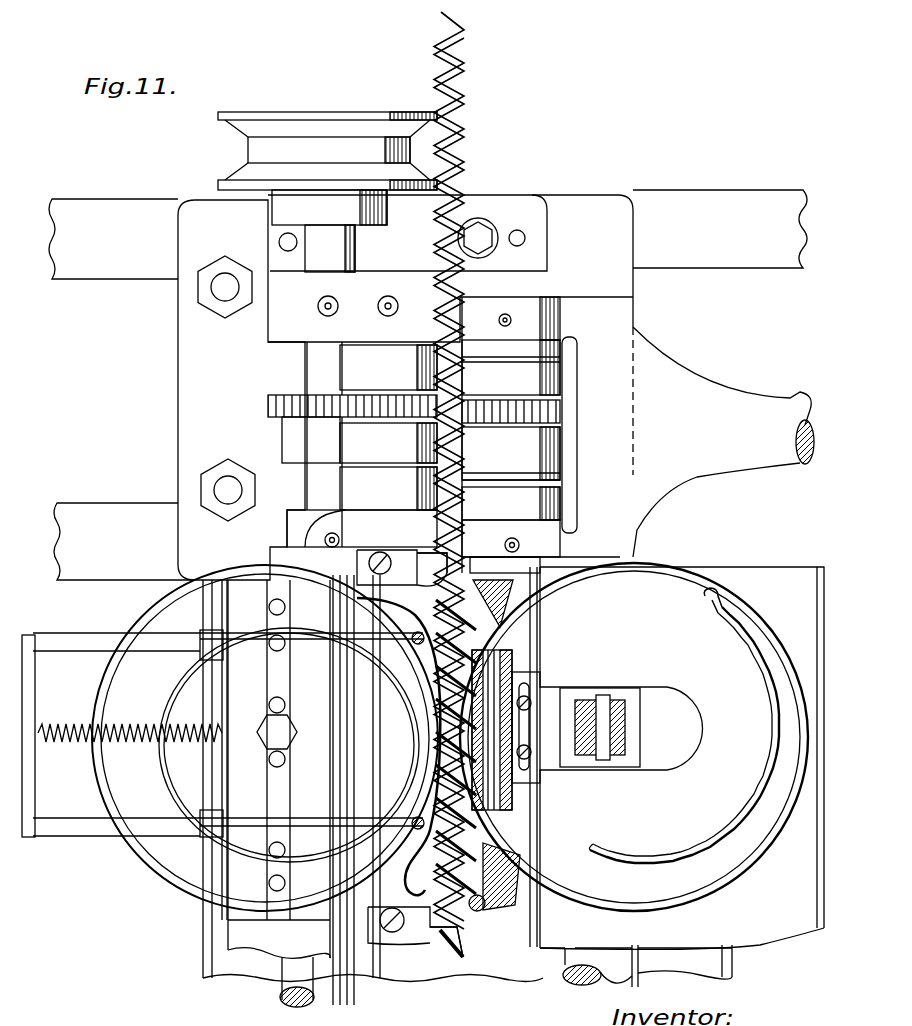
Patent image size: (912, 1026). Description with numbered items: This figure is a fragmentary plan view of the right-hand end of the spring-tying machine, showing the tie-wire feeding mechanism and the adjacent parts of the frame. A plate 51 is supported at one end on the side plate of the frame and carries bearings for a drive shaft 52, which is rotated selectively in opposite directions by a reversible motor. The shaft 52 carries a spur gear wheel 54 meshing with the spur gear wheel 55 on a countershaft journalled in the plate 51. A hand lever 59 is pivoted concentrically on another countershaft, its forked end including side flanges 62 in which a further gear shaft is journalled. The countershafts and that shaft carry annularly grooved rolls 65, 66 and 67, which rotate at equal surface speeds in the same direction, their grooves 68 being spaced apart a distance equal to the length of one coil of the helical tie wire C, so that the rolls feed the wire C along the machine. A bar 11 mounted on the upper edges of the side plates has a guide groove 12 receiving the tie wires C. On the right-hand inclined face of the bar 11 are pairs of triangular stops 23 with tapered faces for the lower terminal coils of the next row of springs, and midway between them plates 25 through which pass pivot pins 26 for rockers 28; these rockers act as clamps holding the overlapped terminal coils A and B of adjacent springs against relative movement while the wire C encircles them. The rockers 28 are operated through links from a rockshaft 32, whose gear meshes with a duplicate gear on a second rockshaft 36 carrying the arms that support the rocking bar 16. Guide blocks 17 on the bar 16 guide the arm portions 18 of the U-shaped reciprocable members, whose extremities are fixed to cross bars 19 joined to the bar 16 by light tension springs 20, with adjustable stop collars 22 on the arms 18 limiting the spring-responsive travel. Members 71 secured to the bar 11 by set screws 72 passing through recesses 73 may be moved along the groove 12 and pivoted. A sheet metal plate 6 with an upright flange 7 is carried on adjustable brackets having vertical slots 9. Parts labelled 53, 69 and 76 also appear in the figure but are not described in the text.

The helical tie wire c is at (462, 43).
The pulley 53 is at (320, 128).
The drive shaft 52 is at (358, 250).
The side flanges 62 is at (548, 297).
The plate 51 is at (213, 372).
The annularly grooved roll 65 is at (380, 382).
The spur gear wheel 54 is at (268, 408).
The annularly grooved roll 67 is at (507, 395).
The grooves 68 is at (560, 396).
The gear 69 is at (563, 412).
The hand lever 59 is at (712, 395).
The spur gear wheel 55 is at (372, 412).
The annularly grooved roll 66 is at (435, 458).
The guide groove 12 is at (425, 485).
The parallel vertical slots 9 is at (137, 547).
The members 71 is at (360, 565).
The set screws 72 is at (395, 955).
The recesses 73 is at (436, 755).
The sheet metal plate 6 is at (757, 567).
The upright flange 7 is at (817, 595).
The arm portions 18 is at (105, 627).
The cross bars 19 is at (35, 692).
The adjustable stop collars 22 is at (222, 655).
The light tension springs 20 is at (152, 720).
The stops 23 is at (490, 605).
The pivot pins 26 is at (485, 652).
The rockers 28 is at (510, 660).
The plates 25 is at (527, 683).
The rockshaft 32 is at (635, 715).
The guide blocks 17 is at (303, 800).
The terminal coil B is at (440, 800).
The helical band 76 is at (485, 862).
The terminal coil A is at (522, 858).
The rocking bar 16 is at (253, 948).
The bar 11 is at (467, 790).
The rockshaft 36 is at (333, 996).